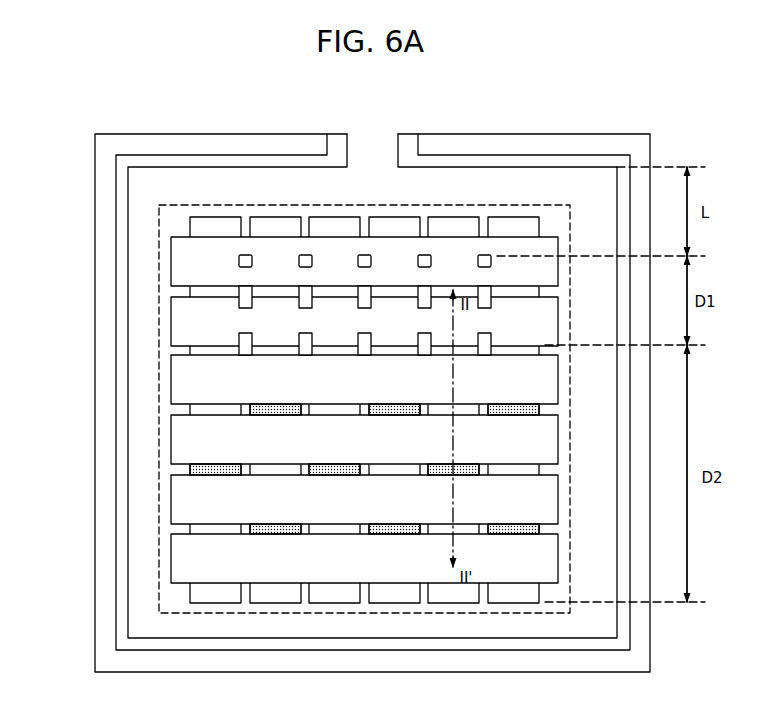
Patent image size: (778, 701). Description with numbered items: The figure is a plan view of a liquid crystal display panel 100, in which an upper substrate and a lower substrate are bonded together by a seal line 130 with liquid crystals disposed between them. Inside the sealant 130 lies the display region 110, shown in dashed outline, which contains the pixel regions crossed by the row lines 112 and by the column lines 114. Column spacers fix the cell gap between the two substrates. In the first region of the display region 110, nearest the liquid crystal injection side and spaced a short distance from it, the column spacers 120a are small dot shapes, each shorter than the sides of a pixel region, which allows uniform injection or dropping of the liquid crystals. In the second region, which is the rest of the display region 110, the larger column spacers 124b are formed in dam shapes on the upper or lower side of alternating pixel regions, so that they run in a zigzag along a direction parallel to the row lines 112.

The liquid crystal display panel 100 is at (590, 133).
The display region 110 is at (183, 205).
The row lines 112 is at (171, 264).
The active region / conductive pattern 114 is at (513, 217).
The column spacer 120a is at (244, 262).
The column spacer 124b is at (267, 522).
The seal line 130 is at (287, 154).